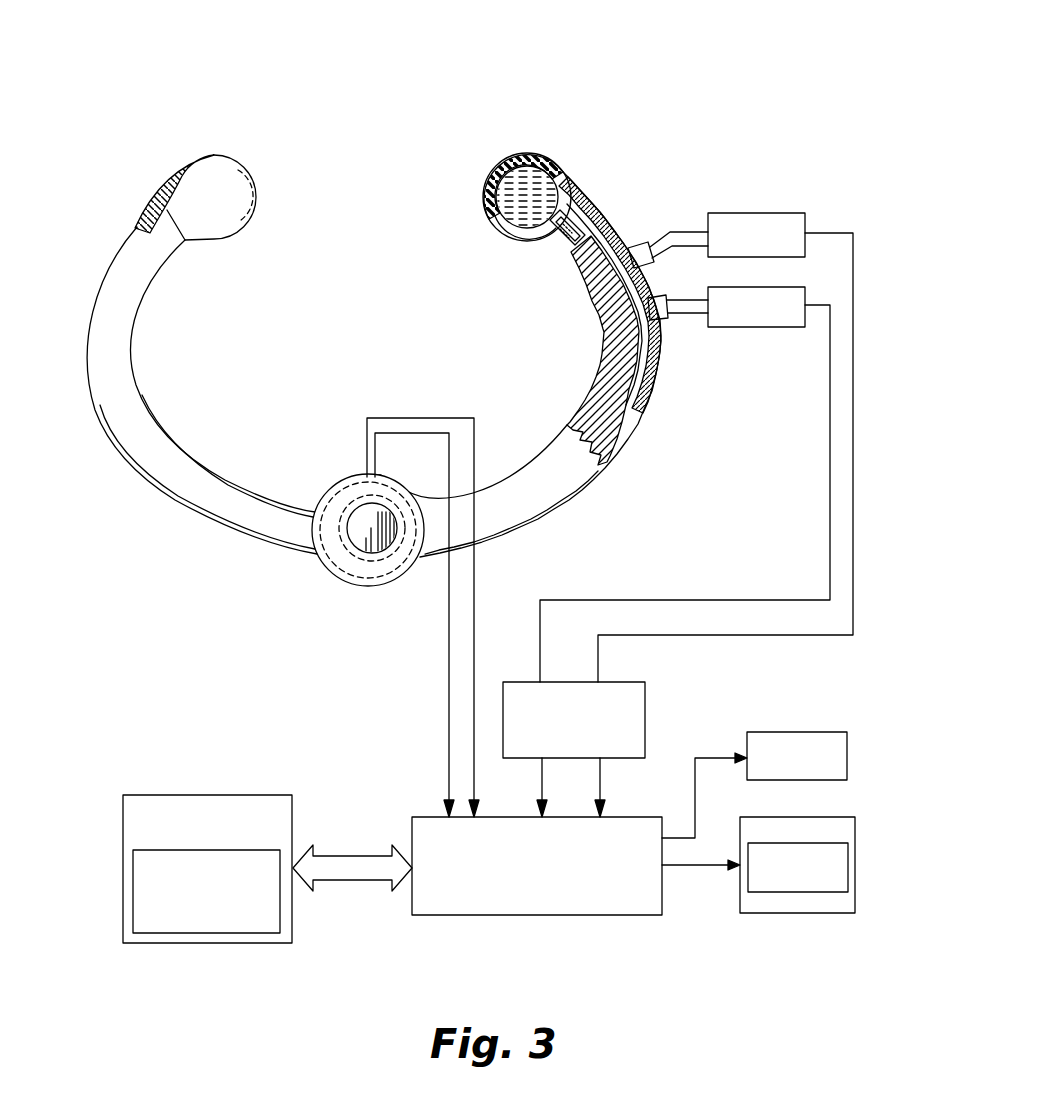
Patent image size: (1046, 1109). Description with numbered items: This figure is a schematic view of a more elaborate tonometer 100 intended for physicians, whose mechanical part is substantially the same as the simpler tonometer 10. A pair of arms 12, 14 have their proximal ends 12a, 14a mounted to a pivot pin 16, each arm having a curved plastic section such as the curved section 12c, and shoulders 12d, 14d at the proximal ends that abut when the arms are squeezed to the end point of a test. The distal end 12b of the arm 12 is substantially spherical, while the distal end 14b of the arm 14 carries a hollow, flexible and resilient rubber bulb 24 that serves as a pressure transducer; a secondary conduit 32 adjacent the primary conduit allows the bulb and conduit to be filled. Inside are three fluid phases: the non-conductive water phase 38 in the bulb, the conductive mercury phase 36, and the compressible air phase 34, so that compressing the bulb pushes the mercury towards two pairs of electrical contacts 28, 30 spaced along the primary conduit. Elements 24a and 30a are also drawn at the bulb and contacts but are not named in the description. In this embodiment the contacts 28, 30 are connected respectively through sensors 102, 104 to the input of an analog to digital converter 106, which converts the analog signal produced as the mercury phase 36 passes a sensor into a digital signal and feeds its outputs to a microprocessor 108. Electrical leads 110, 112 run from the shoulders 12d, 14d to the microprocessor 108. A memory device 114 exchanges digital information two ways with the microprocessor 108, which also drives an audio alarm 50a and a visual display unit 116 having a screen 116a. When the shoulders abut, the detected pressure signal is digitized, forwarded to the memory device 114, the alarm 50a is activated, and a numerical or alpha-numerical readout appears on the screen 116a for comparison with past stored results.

The tonometer 100 is at (624, 54).
The tonometer 10 is at (110, 229).
The arm 12 is at (112, 289).
The proximal end 12a is at (290, 533).
The distal end 12b is at (167, 195).
The curved section 12c is at (140, 437).
The shoulder 12d is at (368, 477).
The arm 14 is at (562, 483).
The proximal end 14a is at (437, 533).
The distal end 14b is at (553, 162).
The shoulder 14d is at (375, 477).
The pivot pin 16 is at (387, 543).
The rubber bulb 24 is at (483, 205).
The bulb channel insert 24a is at (560, 225).
The pair of electrical contacts 28 is at (633, 247).
The pair of electrical contacts 30 is at (655, 297).
The sensor lead channel 30a is at (607, 180).
The secondary conduit 32 is at (550, 240).
The gas phase 34 is at (650, 368).
The first liquid phase 36 is at (580, 263).
The second liquid phase 38 is at (497, 223).
The audio alarm 50a is at (780, 732).
The sensor 102 is at (757, 213).
The sensor 104 is at (740, 327).
The analog to digital converter 106 is at (620, 682).
The microprocessor 108 is at (617, 818).
The electrical lead 110 is at (383, 417).
The electrical lead 112 is at (423, 432).
The memory device 114 is at (237, 795).
The visual display unit 116 is at (787, 817).
The screen 116a is at (770, 887).